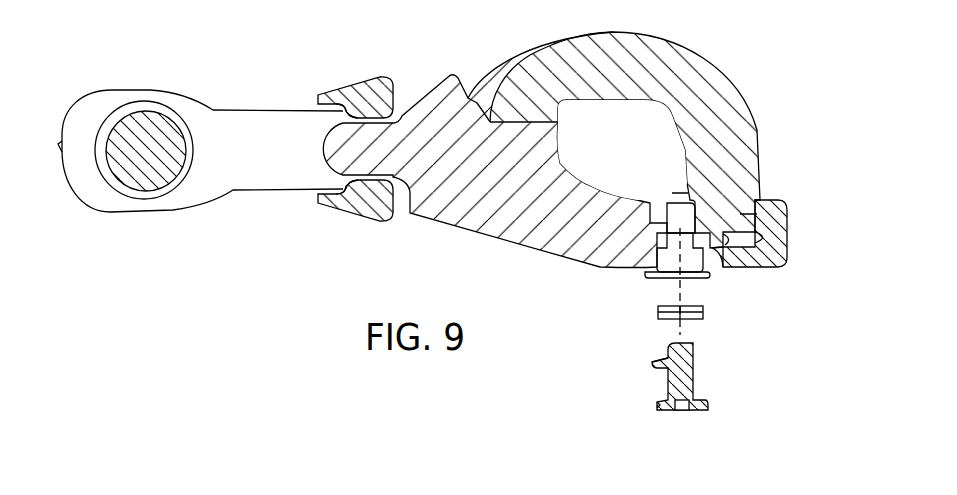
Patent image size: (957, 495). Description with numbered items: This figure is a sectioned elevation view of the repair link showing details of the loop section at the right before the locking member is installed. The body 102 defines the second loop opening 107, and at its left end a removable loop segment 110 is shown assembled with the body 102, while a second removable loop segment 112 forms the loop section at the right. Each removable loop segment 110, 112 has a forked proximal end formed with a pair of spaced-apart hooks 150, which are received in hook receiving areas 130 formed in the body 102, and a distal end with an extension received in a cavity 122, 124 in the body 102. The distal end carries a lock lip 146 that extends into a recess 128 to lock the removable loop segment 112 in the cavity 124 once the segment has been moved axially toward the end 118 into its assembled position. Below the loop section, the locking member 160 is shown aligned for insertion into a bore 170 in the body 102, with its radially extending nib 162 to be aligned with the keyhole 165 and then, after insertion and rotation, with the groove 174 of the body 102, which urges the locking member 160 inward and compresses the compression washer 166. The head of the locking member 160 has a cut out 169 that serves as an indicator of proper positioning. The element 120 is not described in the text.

The body 102 is at (425, 105).
The second loop opening 107 is at (664, 143).
The removable loop segment 110 is at (121, 157).
The removable loop segment 112 is at (757, 130).
The end 118 is at (62, 147).
The bracket 120 is at (790, 250).
The cavity 122 is at (124, 122).
The cavity 124 is at (680, 193).
The recess 128 is at (730, 240).
The hook receiving area 130 is at (343, 110).
The lock lip 146 is at (735, 245).
The hooks 150 is at (367, 95).
The locking member 160 is at (670, 378).
The nib 162 is at (656, 362).
The keyhole 165 is at (683, 412).
The compression washer 166 is at (658, 313).
The cut out 169 is at (658, 405).
The bore 170 is at (695, 268).
The groove 174 is at (663, 227).